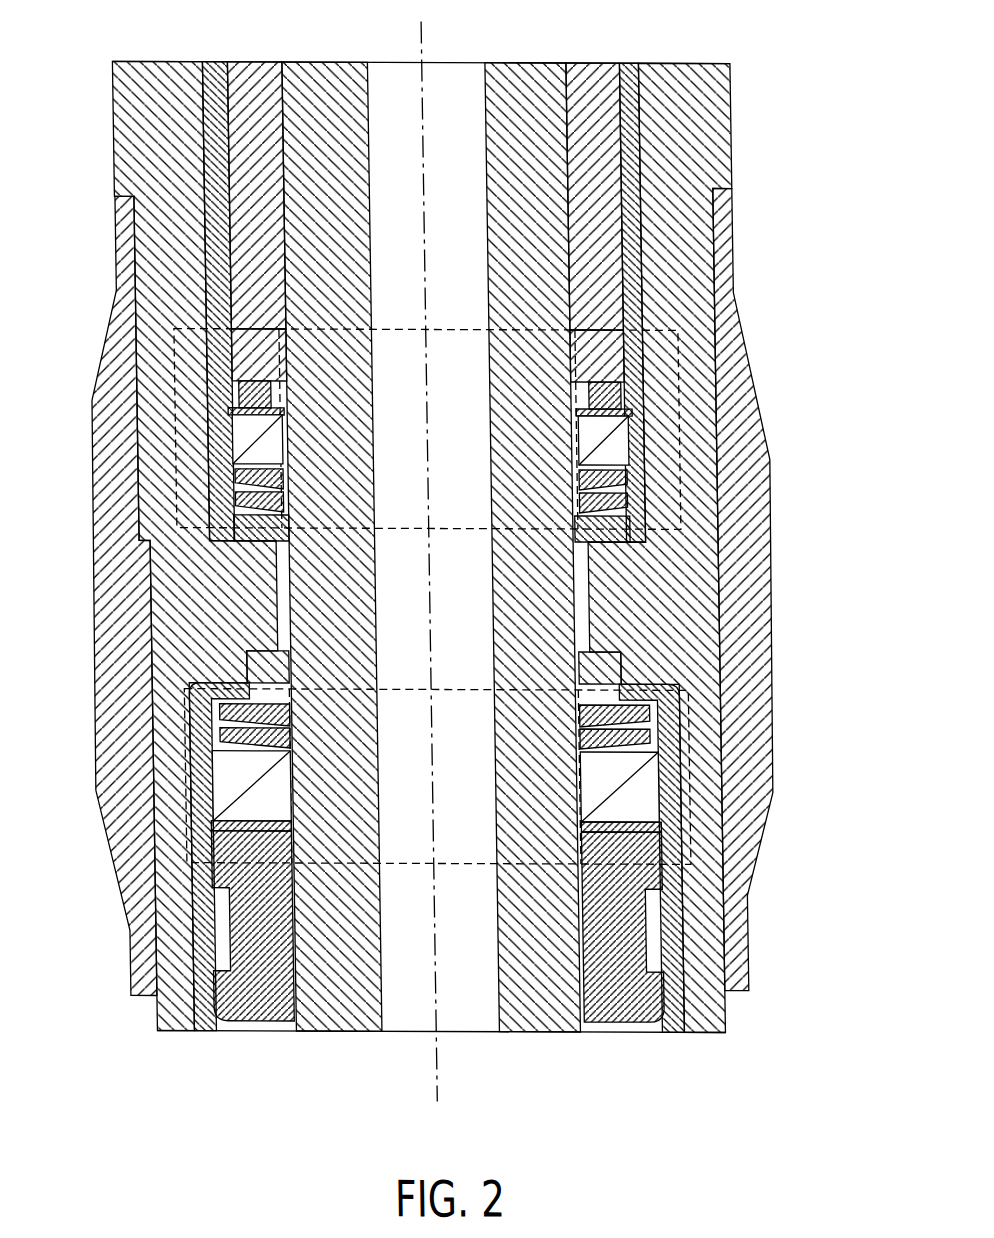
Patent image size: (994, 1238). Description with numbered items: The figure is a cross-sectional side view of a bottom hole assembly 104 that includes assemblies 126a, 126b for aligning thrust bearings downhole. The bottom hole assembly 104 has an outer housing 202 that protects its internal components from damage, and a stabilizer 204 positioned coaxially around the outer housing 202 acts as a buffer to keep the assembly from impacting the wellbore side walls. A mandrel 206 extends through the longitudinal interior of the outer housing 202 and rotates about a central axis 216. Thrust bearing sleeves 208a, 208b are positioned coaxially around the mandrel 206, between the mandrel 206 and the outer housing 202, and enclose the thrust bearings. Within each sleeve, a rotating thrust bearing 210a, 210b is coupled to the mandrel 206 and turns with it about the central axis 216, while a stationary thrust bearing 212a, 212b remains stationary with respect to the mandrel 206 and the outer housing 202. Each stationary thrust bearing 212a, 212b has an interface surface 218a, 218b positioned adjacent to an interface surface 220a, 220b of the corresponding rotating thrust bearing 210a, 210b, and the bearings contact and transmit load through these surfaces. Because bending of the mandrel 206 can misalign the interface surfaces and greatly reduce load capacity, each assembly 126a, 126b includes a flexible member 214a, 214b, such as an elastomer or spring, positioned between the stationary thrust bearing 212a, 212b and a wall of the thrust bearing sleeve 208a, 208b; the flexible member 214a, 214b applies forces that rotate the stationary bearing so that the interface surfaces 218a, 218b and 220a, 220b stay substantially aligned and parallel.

The bottom hole assembly 104 is at (752, 134).
The assembly for aligning thrust bearings 126a is at (159, 400).
The assembly for aligning thrust bearings 126b is at (139, 760).
The outer housing 202 is at (693, 68).
The stabilizer 204 is at (748, 770).
The mandrel 206 is at (529, 68).
The thrust bearing sleeve 208a is at (232, 540).
The thrust bearing sleeve 208b is at (280, 688).
The rotating thrust bearing 210a is at (605, 324).
The rotating thrust bearing 210b is at (612, 1016).
The stationary thrust bearing 212a is at (623, 470).
The stationary thrust bearing 212b is at (628, 800).
The flexible member 214a is at (652, 532).
The flexible member 214b is at (675, 690).
The central axis 216 is at (419, 46).
The interface surface 218a is at (608, 450).
The interface surface 218b is at (248, 820).
The interface surface 220a is at (594, 386).
The interface surface 220b is at (213, 822).